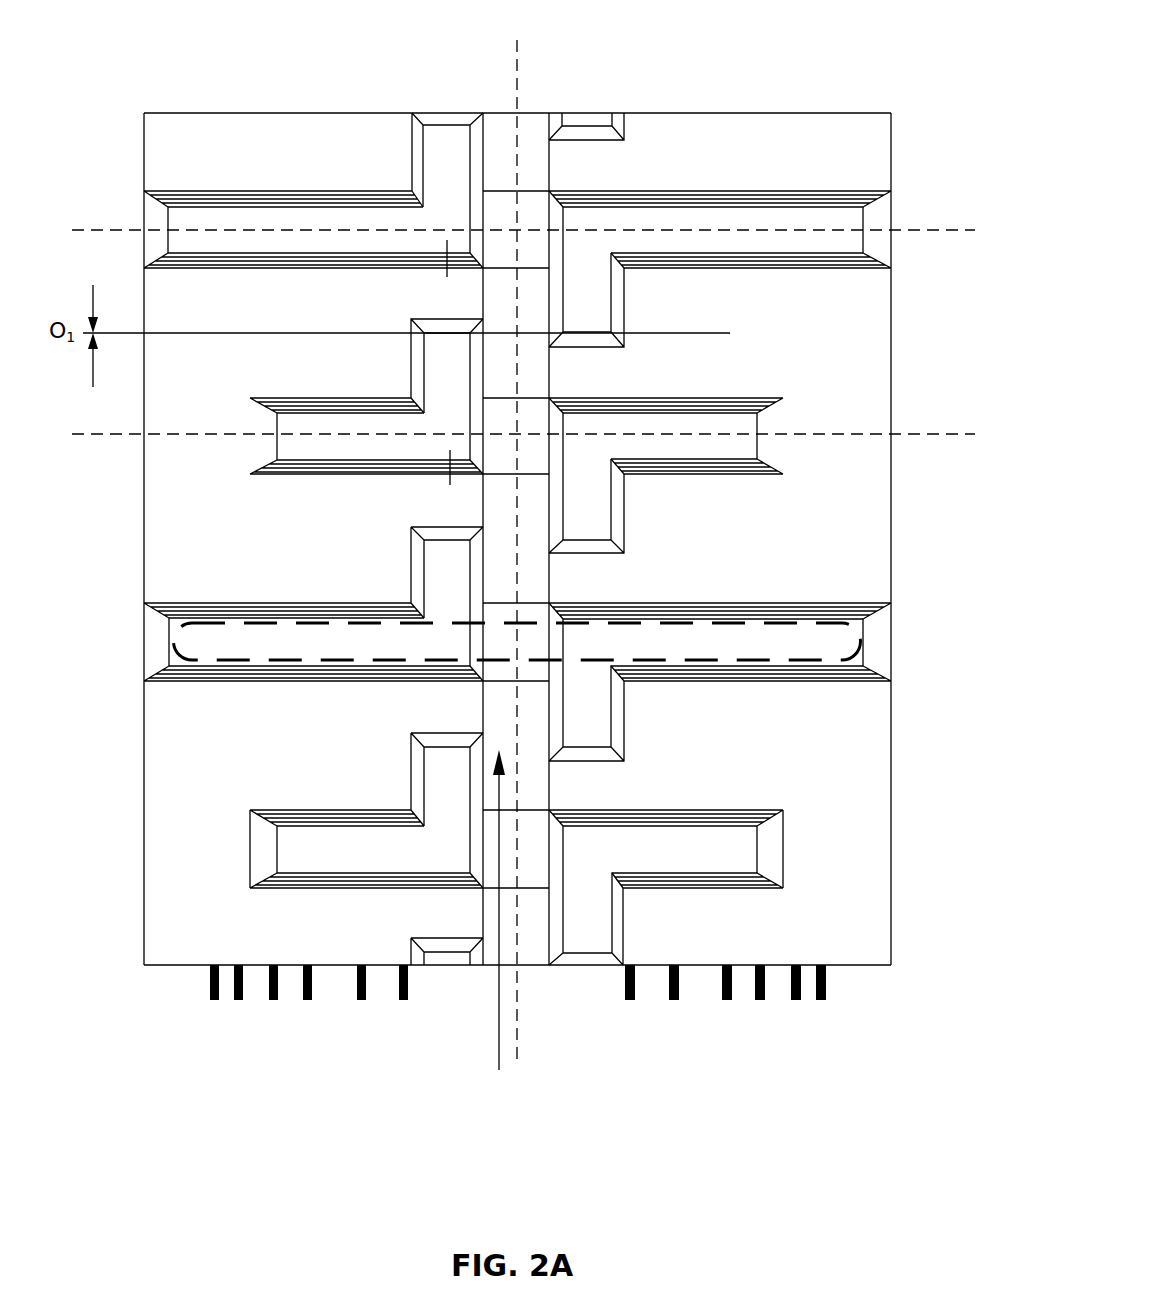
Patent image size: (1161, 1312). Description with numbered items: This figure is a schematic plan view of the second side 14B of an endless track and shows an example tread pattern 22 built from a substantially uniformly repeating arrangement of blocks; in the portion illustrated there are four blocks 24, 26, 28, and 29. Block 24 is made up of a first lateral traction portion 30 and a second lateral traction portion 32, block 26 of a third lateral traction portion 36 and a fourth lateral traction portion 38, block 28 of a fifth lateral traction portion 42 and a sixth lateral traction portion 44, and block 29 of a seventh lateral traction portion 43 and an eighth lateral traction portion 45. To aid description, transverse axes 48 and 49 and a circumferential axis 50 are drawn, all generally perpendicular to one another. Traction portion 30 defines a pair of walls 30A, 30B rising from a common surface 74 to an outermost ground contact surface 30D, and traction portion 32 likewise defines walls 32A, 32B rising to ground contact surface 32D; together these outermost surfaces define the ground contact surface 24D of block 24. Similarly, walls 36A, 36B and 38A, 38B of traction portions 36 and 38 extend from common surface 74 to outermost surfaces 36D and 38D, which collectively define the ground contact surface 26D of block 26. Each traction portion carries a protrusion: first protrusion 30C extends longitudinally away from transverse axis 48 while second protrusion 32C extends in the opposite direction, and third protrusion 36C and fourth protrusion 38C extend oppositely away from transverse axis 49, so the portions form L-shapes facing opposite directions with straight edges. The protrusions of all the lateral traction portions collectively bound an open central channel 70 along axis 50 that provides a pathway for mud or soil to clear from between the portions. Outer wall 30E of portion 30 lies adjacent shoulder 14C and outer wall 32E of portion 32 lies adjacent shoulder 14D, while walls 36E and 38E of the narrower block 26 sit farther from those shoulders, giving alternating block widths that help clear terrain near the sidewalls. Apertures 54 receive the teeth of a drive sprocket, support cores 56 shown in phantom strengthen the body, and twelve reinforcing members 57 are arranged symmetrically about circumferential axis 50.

The tread pattern 22 is at (784, 42).
The second side of body 14B is at (707, 586).
The shoulder 14C is at (144, 775).
The shoulder 14D is at (891, 745).
The block 24 is at (144, 213).
The ground contact surface 24D is at (575, 270).
The block 26 is at (250, 416).
The ground contact surface 26D is at (578, 482).
The block 28 is at (144, 640).
The block 29 is at (250, 847).
The first lateral traction portion 30 is at (285, 209).
The wall 30A is at (302, 270).
The wall 30B is at (310, 190).
The first protrusion 30C is at (443, 160).
The ground contact surface 30D is at (369, 234).
The wall 30E is at (156, 200).
The second lateral traction portion 32 is at (752, 249).
The wall 32A is at (728, 190).
The wall 32B is at (722, 262).
The second protrusion 32C is at (590, 305).
The ground contact surface 32D is at (716, 230).
The wall 32E is at (885, 222).
The third lateral traction portion 36 is at (327, 423).
The wall 36A is at (418, 475).
The wall 36B is at (358, 398).
The third protrusion 36C is at (426, 377).
The ground contact surface 36D is at (339, 440).
The wall 36E is at (260, 450).
The fourth lateral traction portion 38 is at (698, 456).
The wall 38A is at (680, 398).
The wall 38B is at (641, 470).
The fourth protrusion 38C is at (565, 517).
The outermost surface 38D is at (662, 459).
The wall 38E is at (778, 425).
The fifth lateral traction portion 42 is at (299, 655).
The sixth lateral traction portion 44 is at (709, 655).
The seventh lateral traction portion 43 is at (346, 860).
The eighth lateral traction portion 45 is at (666, 860).
The transverse axis 48 is at (128, 232).
The transverse axis 49 is at (128, 437).
The circumferential axis 50 is at (520, 48).
The apertures 54 is at (487, 544).
The support cores 56 is at (672, 665).
The reinforcing members 57 is at (626, 990).
The open central channel 70 is at (499, 926).
The common surface 74 is at (812, 780).